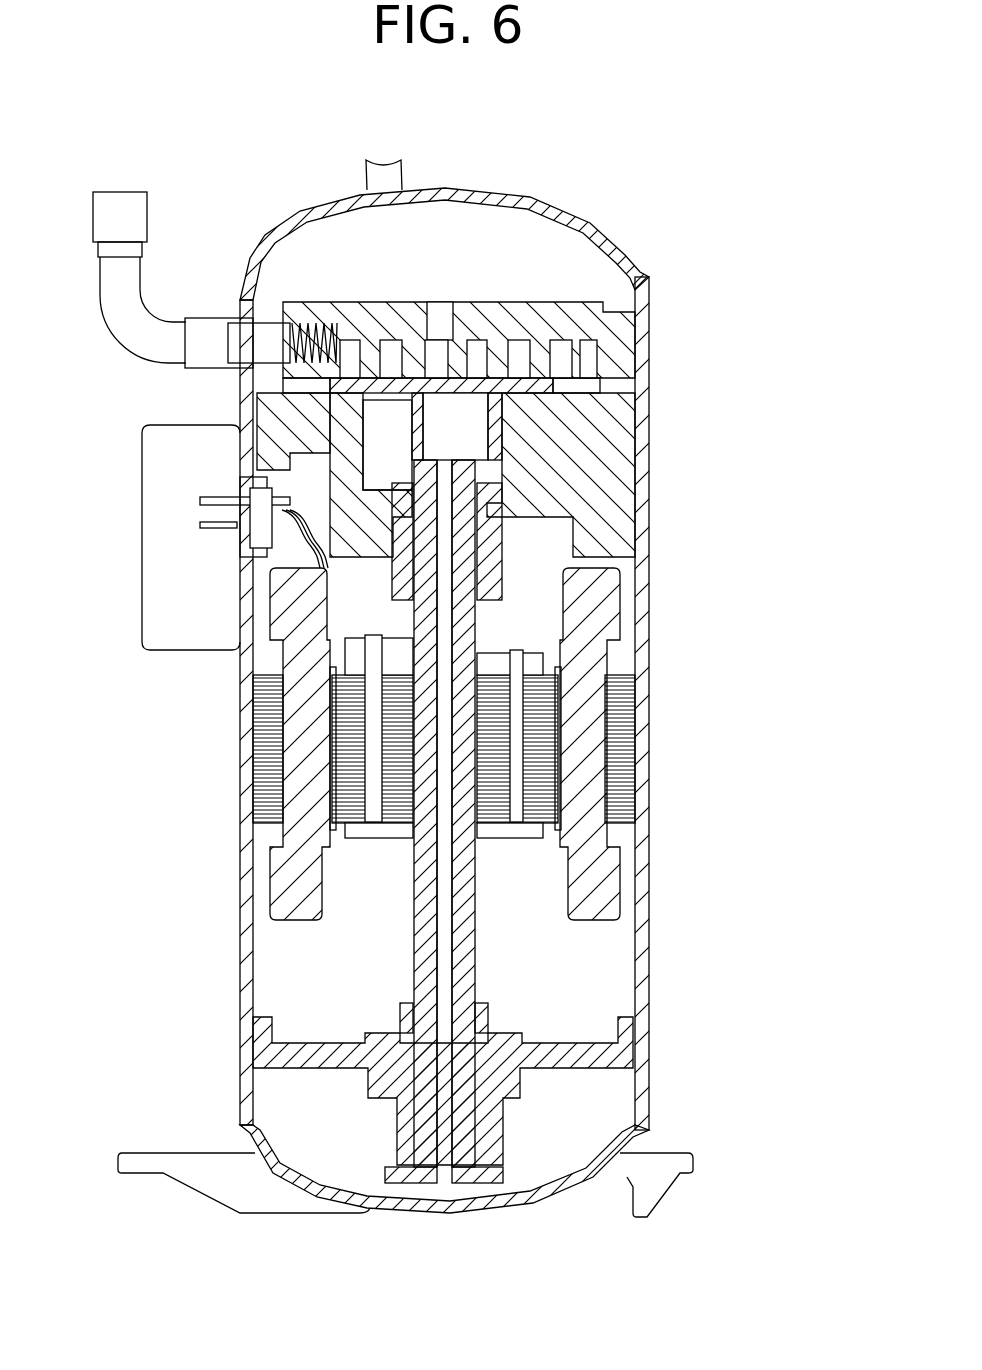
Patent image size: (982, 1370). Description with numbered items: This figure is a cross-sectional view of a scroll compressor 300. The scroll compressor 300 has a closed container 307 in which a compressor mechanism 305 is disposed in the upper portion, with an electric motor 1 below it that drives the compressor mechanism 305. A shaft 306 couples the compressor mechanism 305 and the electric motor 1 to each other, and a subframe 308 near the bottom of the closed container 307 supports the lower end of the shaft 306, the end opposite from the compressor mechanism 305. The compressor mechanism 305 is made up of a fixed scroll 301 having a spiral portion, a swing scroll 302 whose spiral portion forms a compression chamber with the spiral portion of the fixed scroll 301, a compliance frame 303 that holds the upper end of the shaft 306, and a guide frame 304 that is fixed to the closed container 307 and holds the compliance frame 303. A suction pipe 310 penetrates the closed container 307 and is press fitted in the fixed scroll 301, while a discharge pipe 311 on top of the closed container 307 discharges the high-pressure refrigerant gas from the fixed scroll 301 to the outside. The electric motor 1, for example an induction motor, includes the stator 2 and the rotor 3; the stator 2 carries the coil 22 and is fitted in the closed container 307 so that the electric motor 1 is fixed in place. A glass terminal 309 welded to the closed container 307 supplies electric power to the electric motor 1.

The scroll compressor 300 is at (624, 168).
The fixed scroll 301 is at (625, 332).
The swing scroll 302 is at (537, 360).
The compliance frame 303 is at (590, 427).
The guide frame 304 is at (622, 468).
The compressor mechanism 305 is at (748, 297).
The shaft 306 is at (413, 960).
The closed container 307 is at (648, 975).
The subframe 308 is at (598, 1055).
The glass terminal 309 is at (200, 510).
The suction pipe 310 is at (150, 338).
The discharge pipe 311 is at (382, 168).
The electric motor 1 is at (750, 568).
The coil 22 is at (612, 600).
The stator 2 is at (623, 710).
The rotor 3 is at (545, 768).